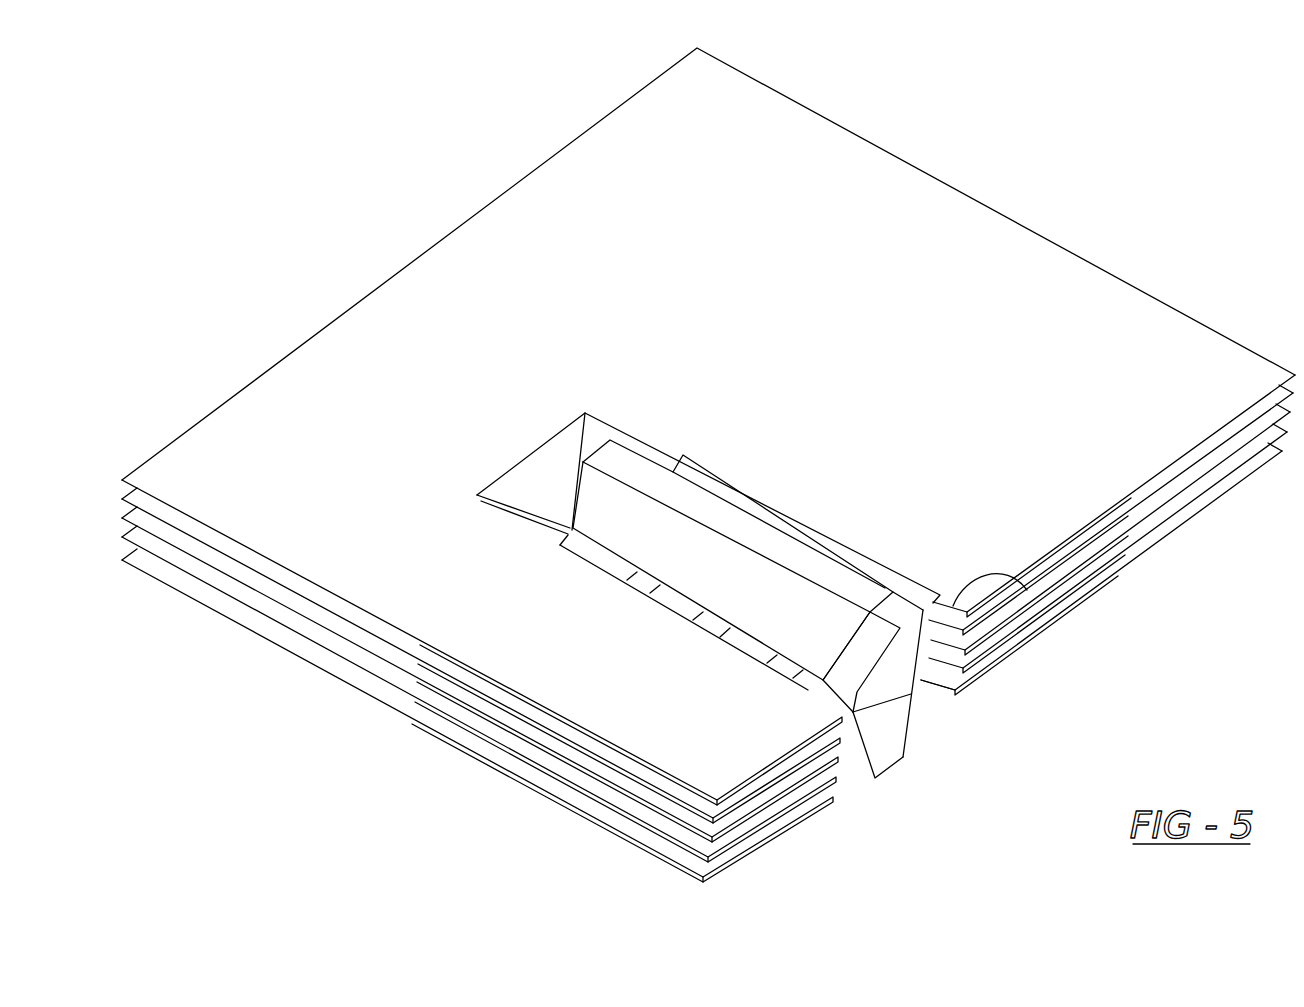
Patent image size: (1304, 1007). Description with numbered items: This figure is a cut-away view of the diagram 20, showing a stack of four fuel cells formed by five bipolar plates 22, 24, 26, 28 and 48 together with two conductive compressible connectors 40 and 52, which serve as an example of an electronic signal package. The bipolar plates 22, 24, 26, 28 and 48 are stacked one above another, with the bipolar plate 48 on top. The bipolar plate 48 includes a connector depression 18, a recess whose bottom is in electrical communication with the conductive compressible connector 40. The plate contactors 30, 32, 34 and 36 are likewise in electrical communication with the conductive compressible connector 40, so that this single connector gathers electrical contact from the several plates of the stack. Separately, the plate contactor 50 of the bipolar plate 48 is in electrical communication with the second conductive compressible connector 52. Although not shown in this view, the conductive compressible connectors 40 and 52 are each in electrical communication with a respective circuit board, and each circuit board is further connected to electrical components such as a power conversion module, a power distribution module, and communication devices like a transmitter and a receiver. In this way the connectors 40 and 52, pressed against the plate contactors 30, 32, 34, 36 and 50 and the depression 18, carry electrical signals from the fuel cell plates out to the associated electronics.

The diagram 20 is at (1087, 162).
The connector depression 18 is at (567, 528).
The bipolar plate 22 is at (575, 808).
The bipolar plate 24 is at (525, 762).
The bipolar plate 26 is at (485, 715).
The bipolar plate 28 is at (400, 652).
The bipolar plate 48 is at (360, 607).
The plate contactor 30 is at (900, 594).
The plate contactor 32 is at (790, 660).
The plate contactor 34 is at (720, 622).
The plate contactor 36 is at (650, 588).
The conductive compressible connector 40 is at (910, 720).
The plate contactor 50 is at (1062, 612).
The conductive compressible connector 52 is at (963, 680).